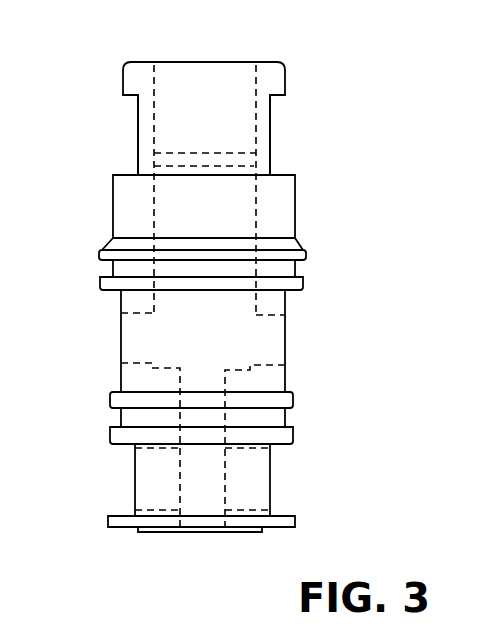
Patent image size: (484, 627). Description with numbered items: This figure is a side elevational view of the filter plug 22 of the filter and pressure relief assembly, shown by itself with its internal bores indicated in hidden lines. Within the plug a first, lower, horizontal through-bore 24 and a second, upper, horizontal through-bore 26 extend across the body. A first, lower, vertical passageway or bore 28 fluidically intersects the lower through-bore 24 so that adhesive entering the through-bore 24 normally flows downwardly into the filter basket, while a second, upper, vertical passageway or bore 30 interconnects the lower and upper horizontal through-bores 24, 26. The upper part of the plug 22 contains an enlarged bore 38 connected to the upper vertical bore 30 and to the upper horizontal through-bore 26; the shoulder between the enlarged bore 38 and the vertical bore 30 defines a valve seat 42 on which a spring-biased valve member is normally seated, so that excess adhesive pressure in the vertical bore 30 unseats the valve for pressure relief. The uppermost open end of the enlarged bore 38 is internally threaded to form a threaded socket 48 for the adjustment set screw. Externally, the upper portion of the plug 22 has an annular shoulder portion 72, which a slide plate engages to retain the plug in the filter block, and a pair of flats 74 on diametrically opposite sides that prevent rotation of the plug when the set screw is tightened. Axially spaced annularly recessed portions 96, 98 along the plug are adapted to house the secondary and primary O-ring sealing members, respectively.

The filter plug 22 is at (297, 192).
The first, lower, horizontal through-bore 24 is at (250, 495).
The second, upper, horizontal through-bore 26 is at (267, 330).
The first, lower, vertical passageway or bore 28 is at (188, 530).
The second, upper, vertical passageway or bore 30 is at (210, 418).
The enlarged bore 38 is at (233, 213).
The valve seat 42 is at (180, 372).
The threaded socket 48 is at (257, 98).
The annular shoulder portion 72 is at (280, 172).
The flats 74 is at (138, 134).
The annularly recessed portion 96 is at (297, 267).
The annularly recessed portion 98 is at (150, 417).